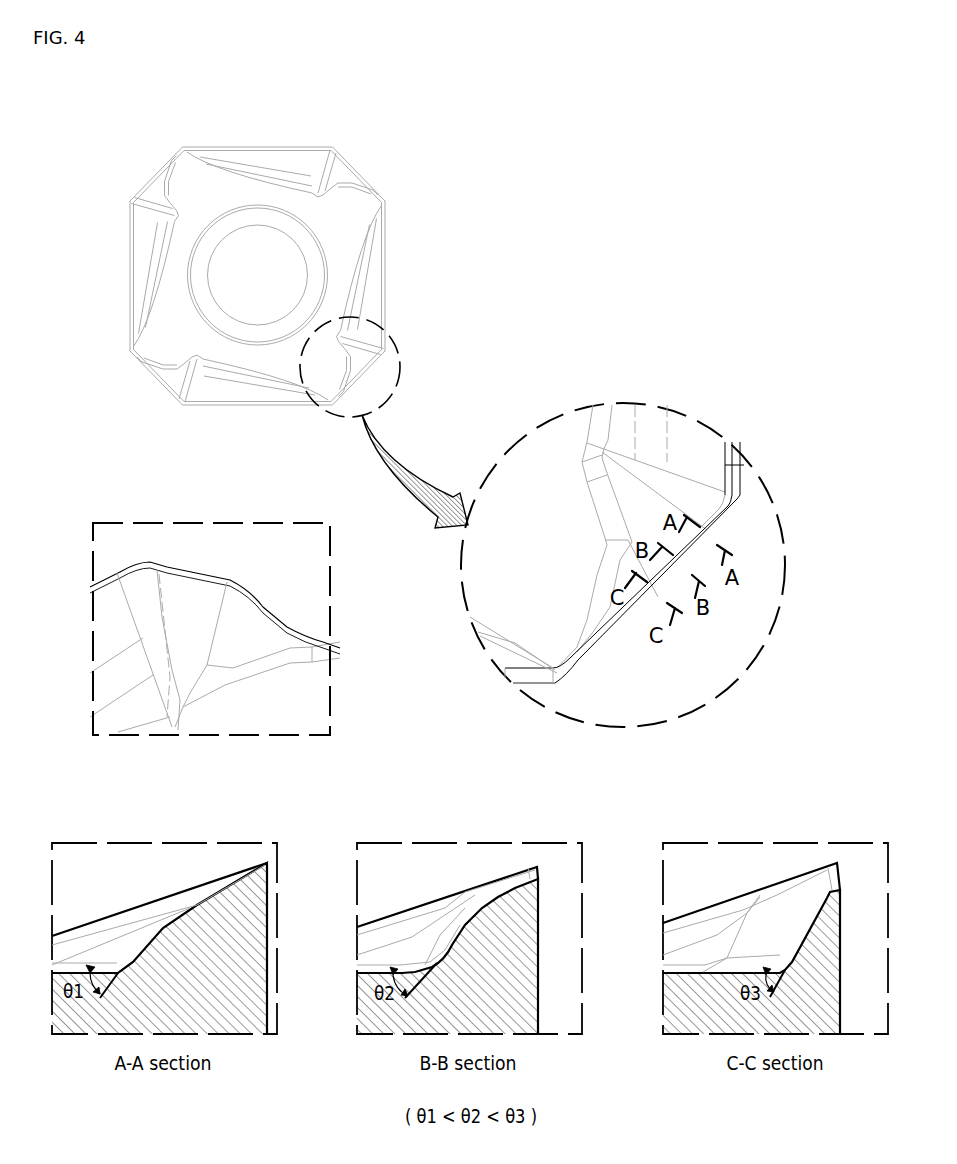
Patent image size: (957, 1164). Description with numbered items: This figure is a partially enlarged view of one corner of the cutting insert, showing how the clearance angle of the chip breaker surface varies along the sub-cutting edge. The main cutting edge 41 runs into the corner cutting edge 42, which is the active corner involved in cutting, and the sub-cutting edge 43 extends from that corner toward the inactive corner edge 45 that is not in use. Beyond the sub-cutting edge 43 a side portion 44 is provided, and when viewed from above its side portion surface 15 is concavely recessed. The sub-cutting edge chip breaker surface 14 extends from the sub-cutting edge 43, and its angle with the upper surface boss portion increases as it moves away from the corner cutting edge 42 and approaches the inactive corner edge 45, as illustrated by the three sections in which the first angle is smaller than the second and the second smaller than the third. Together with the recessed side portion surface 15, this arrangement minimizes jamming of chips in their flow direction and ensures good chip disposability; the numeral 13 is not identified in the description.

The upper surface 13 is at (683, 492).
The sub-cutting edge chip breaker surface 14 is at (648, 520).
The side portion surface 15 is at (620, 577).
The main cutting edge 41 is at (738, 465).
The corner cutting edge 42 is at (728, 515).
The sub-cutting edge 43 is at (198, 573).
The side portion 44 is at (623, 628).
The inactive corner edge 45 is at (554, 673).